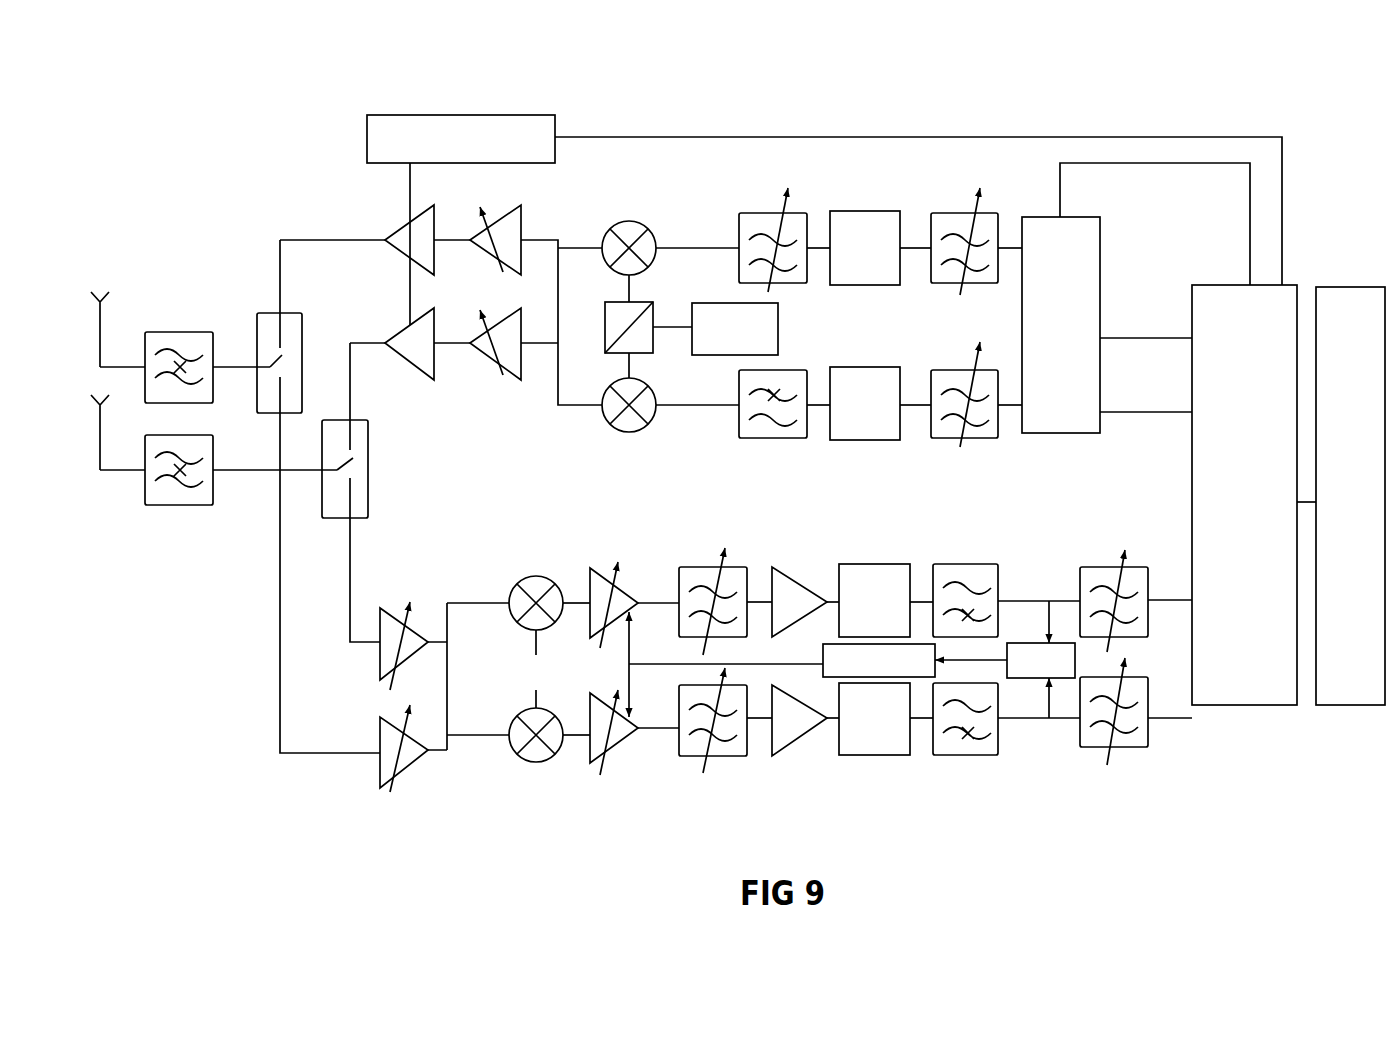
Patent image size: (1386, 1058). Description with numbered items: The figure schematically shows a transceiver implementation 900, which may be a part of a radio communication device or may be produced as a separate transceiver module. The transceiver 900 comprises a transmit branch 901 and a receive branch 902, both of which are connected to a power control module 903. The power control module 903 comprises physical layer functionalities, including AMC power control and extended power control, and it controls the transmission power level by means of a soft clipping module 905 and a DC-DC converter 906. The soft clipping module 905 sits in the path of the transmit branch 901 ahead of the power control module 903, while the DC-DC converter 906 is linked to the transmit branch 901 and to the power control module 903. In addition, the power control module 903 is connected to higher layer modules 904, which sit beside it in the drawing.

The transceiver implementation 900 is at (130, 102).
The transmit branch 901 is at (360, 188).
The receive branch 902 is at (355, 812).
The power control module 903 is at (1217, 705).
The higher layer modules 904 is at (1347, 705).
The soft clipping module 905 is at (1100, 257).
The DC-DC converter 906 is at (555, 115).